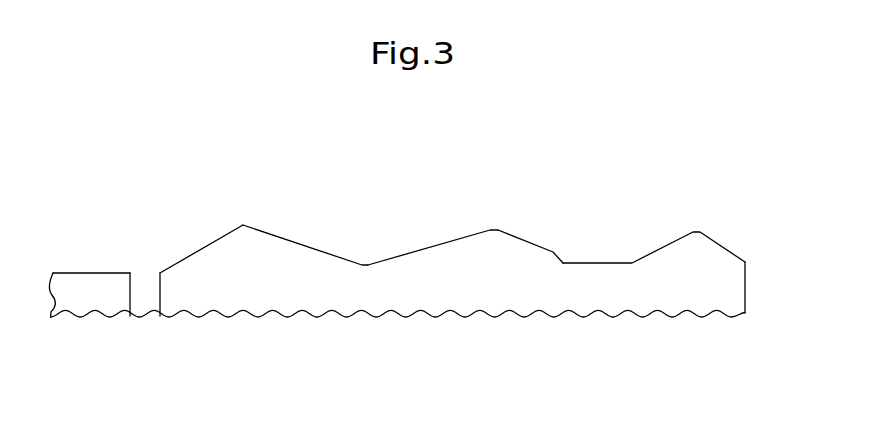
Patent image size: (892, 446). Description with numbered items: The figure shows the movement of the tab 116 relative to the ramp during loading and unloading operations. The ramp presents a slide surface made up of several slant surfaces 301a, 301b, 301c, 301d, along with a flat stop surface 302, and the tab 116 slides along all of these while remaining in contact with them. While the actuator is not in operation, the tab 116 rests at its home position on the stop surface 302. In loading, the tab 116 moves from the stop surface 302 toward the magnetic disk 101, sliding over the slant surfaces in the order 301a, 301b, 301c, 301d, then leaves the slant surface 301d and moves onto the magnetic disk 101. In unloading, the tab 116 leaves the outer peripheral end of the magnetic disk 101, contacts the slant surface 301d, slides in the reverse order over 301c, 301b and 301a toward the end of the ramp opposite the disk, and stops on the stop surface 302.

The magnetic disk 101 is at (80, 305).
The tab 116 is at (125, 256).
The slant surface 301a is at (527, 241).
The slant surface 301b is at (461, 238).
The slant surface 301c is at (334, 254).
The slant surface 301d is at (222, 237).
The stop surface 302 is at (627, 262).